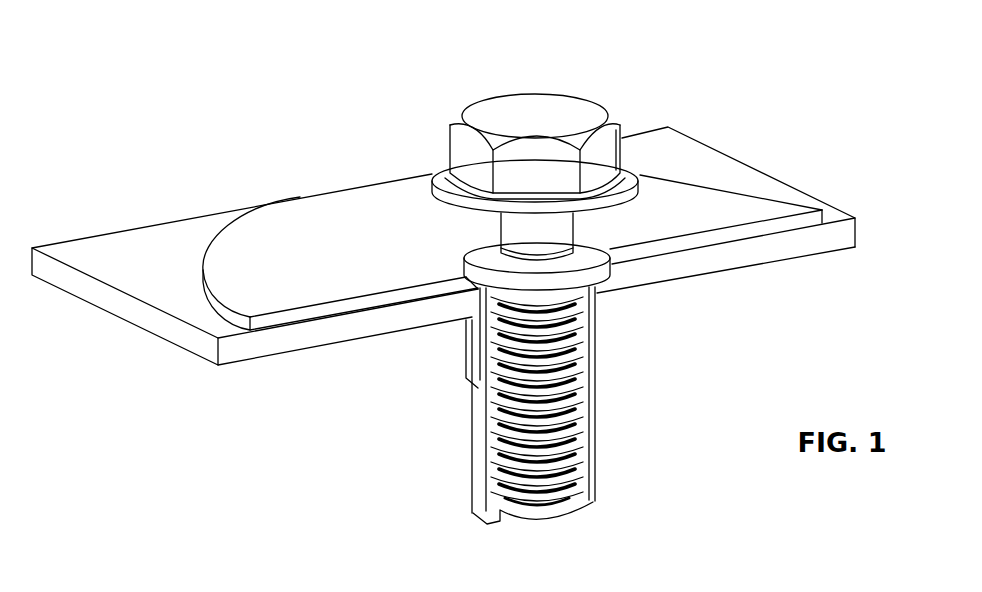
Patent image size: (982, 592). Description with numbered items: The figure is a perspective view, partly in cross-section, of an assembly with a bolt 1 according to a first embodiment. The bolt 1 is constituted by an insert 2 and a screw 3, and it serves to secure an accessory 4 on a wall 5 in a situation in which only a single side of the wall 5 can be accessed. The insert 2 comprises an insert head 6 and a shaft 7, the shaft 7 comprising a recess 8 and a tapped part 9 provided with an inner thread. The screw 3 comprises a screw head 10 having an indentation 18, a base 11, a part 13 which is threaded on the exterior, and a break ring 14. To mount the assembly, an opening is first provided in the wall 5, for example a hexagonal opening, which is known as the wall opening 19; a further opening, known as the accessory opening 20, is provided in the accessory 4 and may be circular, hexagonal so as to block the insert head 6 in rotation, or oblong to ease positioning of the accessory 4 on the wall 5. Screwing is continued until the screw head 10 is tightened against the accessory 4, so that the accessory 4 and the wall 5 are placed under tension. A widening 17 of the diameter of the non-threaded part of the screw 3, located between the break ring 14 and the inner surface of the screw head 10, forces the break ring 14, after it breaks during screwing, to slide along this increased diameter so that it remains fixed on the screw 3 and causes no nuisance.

The bolt 1 is at (522, 285).
The insert 2 is at (522, 389).
The screw 3 is at (545, 100).
The accessory 4 is at (443, 239).
The wall 5 is at (835, 213).
The insert head 6 is at (357, 320).
The shaft 7 is at (594, 343).
The recess 8 is at (595, 314).
The tapped part 9 is at (560, 493).
The screw head 10 is at (520, 98).
The base 11 is at (437, 175).
The threaded part 13 is at (586, 401).
The break ring 14 is at (487, 253).
The widening 17 is at (578, 230).
The indentation 18 is at (625, 115).
The wall opening 19 is at (450, 298).
The accessory opening 20 is at (463, 280).